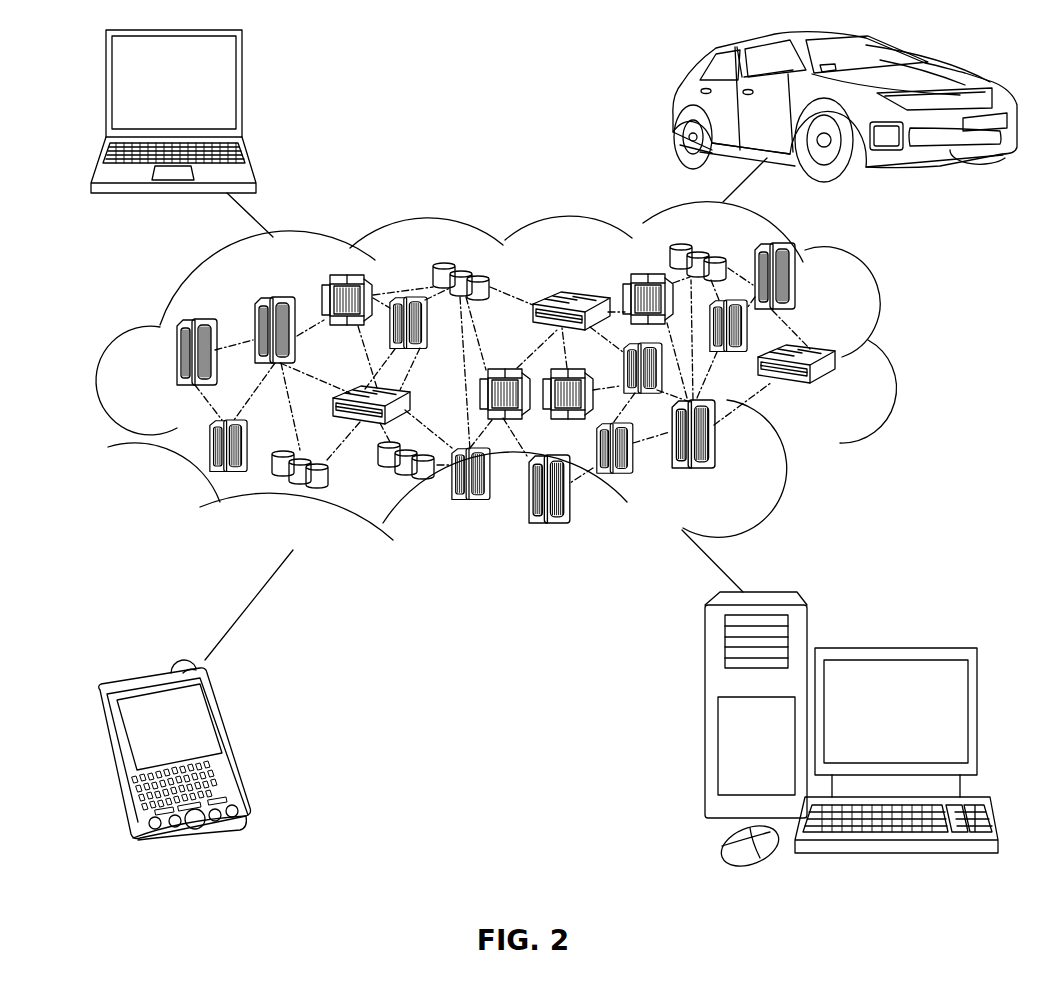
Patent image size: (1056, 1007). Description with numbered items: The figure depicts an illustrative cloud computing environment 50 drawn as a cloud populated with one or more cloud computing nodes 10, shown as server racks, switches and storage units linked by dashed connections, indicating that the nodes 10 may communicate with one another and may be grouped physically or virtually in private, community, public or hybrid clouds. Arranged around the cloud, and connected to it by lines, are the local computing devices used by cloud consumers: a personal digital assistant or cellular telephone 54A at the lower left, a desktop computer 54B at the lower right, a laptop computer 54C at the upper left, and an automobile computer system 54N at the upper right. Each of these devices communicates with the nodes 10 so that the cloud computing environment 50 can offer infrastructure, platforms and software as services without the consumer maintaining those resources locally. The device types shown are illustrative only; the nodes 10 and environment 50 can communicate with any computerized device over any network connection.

The cloud computing nodes 10 is at (838, 390).
The cloud computing environment 50 is at (890, 365).
The personal digital assistant (PDA) or cellular telephone 54A is at (232, 740).
The desktop computer 54B is at (893, 647).
The laptop computer 54C is at (242, 92).
The automobile computer system 54N is at (675, 108).